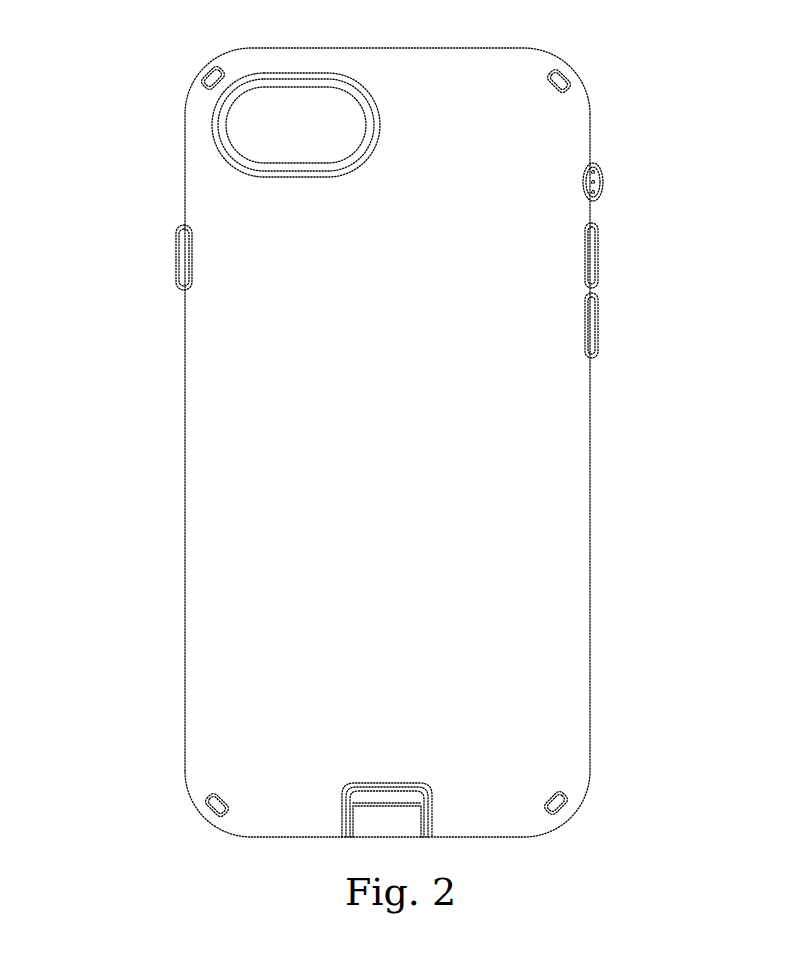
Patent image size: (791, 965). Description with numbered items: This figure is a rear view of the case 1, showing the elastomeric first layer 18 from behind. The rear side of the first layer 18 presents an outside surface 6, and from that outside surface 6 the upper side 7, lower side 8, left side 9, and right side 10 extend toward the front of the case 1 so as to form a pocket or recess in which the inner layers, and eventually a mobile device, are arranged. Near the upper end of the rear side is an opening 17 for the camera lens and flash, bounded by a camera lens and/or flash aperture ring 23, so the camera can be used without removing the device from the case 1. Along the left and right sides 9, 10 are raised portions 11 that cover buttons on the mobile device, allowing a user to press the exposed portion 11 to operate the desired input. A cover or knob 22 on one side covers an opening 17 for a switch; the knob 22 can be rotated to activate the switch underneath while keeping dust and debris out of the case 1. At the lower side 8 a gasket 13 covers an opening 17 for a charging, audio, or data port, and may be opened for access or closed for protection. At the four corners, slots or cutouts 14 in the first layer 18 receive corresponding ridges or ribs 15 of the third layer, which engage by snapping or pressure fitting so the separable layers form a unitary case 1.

The case 1 is at (133, 432).
The outside surface 6 is at (270, 530).
The upper side 7 is at (412, 58).
The lower side 8 is at (497, 838).
The left side 9 is at (593, 660).
The right side 10 is at (183, 660).
The portions covering buttons 11 is at (183, 258).
The gasket 13 is at (388, 793).
The slots or cutouts 14 is at (222, 74).
The ridges or ribs 15 is at (560, 79).
The openings or cutouts 17 is at (262, 133).
The first layer 18 is at (267, 453).
The cover or knob 22 is at (598, 185).
The camera lens and/or flash aperture ring 23 is at (213, 118).